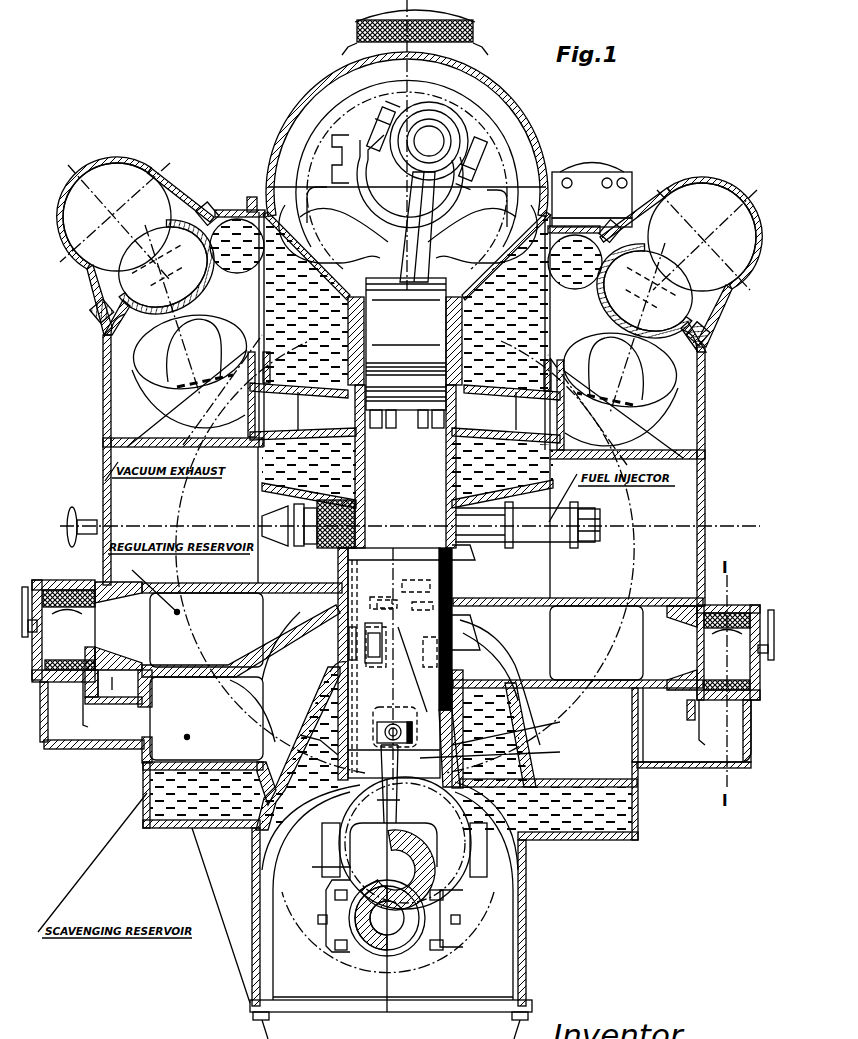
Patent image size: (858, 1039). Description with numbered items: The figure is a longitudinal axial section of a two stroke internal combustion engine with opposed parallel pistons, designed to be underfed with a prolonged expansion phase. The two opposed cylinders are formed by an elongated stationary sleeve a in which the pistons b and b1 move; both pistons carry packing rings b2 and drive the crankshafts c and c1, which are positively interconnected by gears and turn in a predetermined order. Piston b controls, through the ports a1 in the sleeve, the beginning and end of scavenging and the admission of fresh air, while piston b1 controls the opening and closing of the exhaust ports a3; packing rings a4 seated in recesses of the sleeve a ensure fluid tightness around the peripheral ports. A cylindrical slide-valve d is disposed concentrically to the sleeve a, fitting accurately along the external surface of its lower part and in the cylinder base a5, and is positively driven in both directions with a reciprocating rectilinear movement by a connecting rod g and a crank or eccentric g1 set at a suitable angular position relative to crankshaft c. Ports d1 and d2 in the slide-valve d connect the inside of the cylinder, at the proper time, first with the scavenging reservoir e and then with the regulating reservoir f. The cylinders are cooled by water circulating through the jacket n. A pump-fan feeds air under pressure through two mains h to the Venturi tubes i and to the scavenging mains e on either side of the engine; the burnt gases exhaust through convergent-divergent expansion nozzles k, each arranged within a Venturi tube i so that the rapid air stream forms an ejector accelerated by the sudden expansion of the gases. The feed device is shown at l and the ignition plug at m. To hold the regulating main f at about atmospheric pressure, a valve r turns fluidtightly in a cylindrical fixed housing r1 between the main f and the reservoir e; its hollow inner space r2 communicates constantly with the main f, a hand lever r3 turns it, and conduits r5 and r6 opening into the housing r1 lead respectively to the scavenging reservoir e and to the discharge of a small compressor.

The stationary sleeve a is at (366, 462).
The ports a1 is at (455, 638).
The exhaust ports a3 is at (432, 422).
The packing rings a4 is at (455, 572).
The cylinder base a5 is at (373, 752).
The piston b is at (455, 688).
The piston b1 is at (406, 322).
The packing rings b2 is at (367, 364).
The crankshaft c is at (367, 947).
The crankshaft c1 is at (383, 187).
The cylindrical slide-valve d is at (460, 683).
The port d1 is at (330, 653).
The port d2 is at (383, 575).
The scavenging reservoir e is at (648, 770).
The regulating reservoir f is at (624, 622).
The connecting rod g is at (469, 771).
The crank or eccentric g1 is at (450, 833).
The mains h is at (690, 441).
The Venturi tubes i is at (675, 307).
The convergent-divergent expansion nozzles k is at (640, 365).
The feed device l is at (493, 520).
The ignition plug m is at (352, 512).
The jacket n is at (620, 808).
The valve r is at (745, 610).
The cylindrical fixed housing r1 is at (757, 610).
The hollow inner space r2 is at (737, 673).
The hand lever r3 is at (771, 610).
The conduit r5 is at (68, 730).
The conduit r6 is at (712, 628).